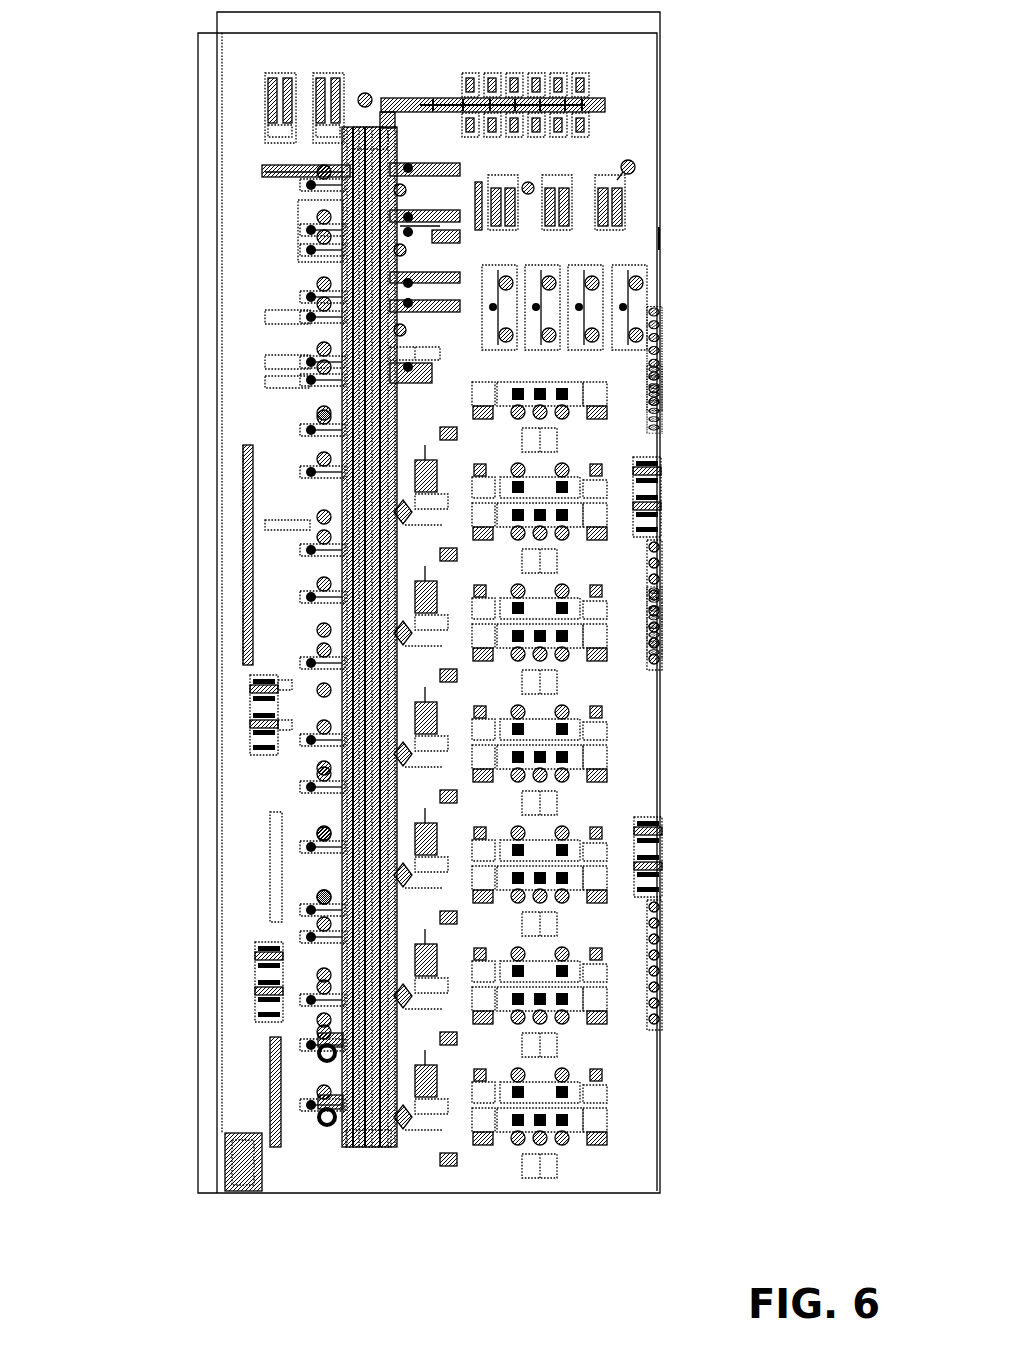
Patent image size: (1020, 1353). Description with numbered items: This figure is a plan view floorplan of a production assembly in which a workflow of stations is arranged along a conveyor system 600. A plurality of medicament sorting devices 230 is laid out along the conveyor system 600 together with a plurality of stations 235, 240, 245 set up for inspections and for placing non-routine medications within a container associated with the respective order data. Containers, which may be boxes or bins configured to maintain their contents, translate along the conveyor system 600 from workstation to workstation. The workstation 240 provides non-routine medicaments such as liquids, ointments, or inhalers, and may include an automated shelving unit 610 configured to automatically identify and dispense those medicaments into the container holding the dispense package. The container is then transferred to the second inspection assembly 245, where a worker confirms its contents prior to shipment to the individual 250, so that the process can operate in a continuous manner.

The individual 250 is at (330, 72).
The conveyor system 600 is at (232, 637).
The second inspection assembly 245 is at (182, 627).
The medicament sorting devices 230 is at (651, 464).
The station 235 is at (642, 681).
The workstation 240 is at (191, 962).
The automated shelving unit 610 is at (185, 1047).